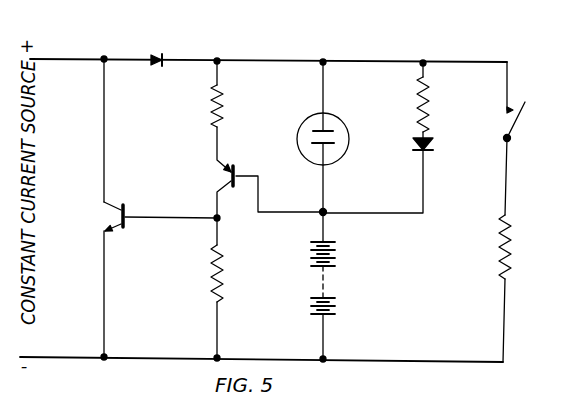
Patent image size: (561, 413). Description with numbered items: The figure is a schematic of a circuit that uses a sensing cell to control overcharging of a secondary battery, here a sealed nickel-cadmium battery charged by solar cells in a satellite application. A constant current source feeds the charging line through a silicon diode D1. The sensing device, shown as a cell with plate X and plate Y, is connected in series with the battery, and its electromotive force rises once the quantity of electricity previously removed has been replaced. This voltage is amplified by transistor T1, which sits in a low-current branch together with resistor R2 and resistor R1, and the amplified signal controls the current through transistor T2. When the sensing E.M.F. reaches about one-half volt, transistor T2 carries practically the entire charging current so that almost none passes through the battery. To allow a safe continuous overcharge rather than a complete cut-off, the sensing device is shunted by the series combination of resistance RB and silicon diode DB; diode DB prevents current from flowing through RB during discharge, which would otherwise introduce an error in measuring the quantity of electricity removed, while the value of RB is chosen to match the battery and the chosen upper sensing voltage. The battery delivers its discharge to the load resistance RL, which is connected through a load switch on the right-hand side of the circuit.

The silicon diode D1 is at (160, 47).
The resistor R2 is at (232, 92).
The transistor T1 is at (268, 186).
The transistor T2 is at (160, 228).
The resistor R1 is at (232, 303).
The plate X is at (315, 129).
The plate Y is at (316, 145).
The resistance RB is at (438, 96).
The silicon diode DB is at (391, 172).
The load resistance RL is at (519, 250).